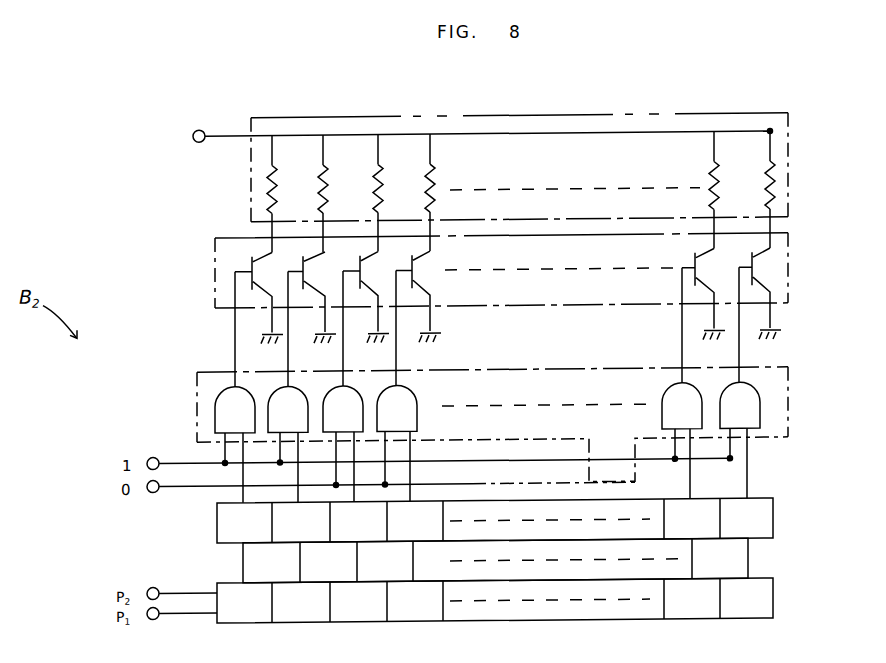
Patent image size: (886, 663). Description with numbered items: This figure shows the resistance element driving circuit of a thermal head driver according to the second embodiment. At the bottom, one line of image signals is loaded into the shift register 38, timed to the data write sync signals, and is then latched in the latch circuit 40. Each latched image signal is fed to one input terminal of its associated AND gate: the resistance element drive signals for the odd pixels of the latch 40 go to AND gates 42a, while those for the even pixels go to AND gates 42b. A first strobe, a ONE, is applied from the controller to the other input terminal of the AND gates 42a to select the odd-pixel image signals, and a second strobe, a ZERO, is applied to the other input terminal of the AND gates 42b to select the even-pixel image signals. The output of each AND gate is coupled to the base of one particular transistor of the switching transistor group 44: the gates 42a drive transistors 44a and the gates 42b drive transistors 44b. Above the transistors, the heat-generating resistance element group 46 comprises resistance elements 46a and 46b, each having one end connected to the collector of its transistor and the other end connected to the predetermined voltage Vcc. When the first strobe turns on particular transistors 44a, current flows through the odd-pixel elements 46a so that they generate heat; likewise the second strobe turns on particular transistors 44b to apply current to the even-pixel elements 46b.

The heat-generating resistance element group 46 is at (792, 132).
The heat-generating resistance element 46a is at (317, 178).
The heat-generating resistance element 46b is at (390, 181).
The switching transistor group 44 is at (787, 245).
The transistor 44a is at (300, 265).
The transistor 44b is at (358, 233).
The latch circuit 40 is at (782, 378).
The AND gate 42a is at (272, 392).
The AND gate 42b is at (357, 392).
The shift register 38 is at (767, 595).